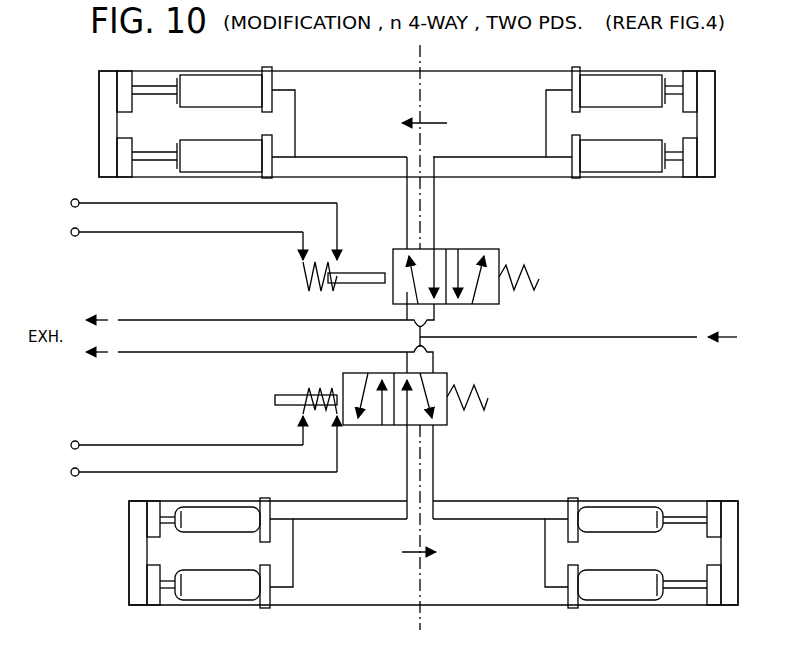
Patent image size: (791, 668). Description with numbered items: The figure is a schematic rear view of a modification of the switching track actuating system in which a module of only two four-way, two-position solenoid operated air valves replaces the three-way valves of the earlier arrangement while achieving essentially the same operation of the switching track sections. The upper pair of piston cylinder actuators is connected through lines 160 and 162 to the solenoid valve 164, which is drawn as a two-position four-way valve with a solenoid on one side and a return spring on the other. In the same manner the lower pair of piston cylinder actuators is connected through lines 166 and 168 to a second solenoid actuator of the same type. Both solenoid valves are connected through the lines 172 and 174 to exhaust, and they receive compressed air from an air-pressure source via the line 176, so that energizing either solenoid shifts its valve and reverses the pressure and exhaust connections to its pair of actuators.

The line 160 is at (411, 203).
The line 162 is at (434, 205).
The solenoid valve 164 is at (485, 249).
The line 166 is at (407, 467).
The line 168 is at (433, 470).
The line 172 is at (165, 321).
The line 174 is at (145, 445).
The line 176 is at (611, 336).